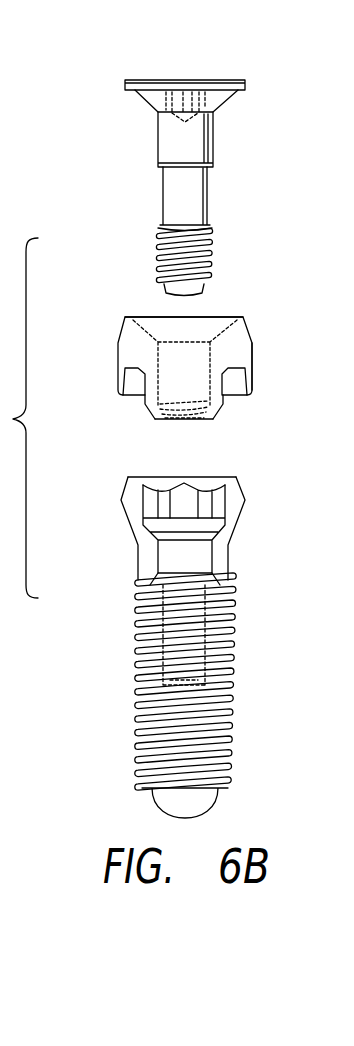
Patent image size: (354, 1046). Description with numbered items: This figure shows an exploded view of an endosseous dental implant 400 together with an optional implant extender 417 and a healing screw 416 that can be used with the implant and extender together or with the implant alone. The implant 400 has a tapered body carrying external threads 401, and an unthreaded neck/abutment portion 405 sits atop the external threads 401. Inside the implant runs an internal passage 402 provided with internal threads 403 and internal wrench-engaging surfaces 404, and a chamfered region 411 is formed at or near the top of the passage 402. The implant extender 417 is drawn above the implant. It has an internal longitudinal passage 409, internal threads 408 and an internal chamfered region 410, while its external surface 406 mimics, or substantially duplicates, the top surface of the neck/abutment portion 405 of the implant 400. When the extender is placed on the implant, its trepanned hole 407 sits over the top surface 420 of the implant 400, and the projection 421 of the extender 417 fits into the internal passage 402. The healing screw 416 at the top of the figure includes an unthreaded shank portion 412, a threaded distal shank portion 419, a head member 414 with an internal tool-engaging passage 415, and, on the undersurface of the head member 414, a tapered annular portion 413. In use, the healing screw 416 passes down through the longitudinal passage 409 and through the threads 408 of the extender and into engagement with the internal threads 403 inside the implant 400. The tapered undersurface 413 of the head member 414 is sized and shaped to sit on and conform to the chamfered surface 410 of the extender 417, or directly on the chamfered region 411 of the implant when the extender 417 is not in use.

The endosseous dental implant 400 is at (115, 743).
The external threads 401 is at (142, 674).
The internal passage 402 is at (233, 622).
The internal threads 403 is at (183, 585).
The internal wrench-engaging surfaces 404 is at (223, 505).
The unthreaded neck/abutment portion 405 is at (129, 525).
The external surface 406 is at (253, 363).
The trepanned hole 407 is at (237, 389).
The internal threads 408 is at (190, 420).
The internal longitudinal passage 409 is at (200, 348).
The internal chamfered region 410 is at (154, 319).
The chamfered region 411 is at (238, 477).
The unthreaded shank portion 412 is at (208, 202).
The tapered annular portion 413 is at (224, 102).
The head member 414 is at (226, 80).
The internal tool-engaging passage 415 is at (188, 81).
The healing screw 416 is at (139, 189).
The implant extender 417 is at (99, 376).
The threaded distal shank portion 419 is at (211, 272).
The top surface 420 is at (130, 494).
The projection 421 is at (151, 413).